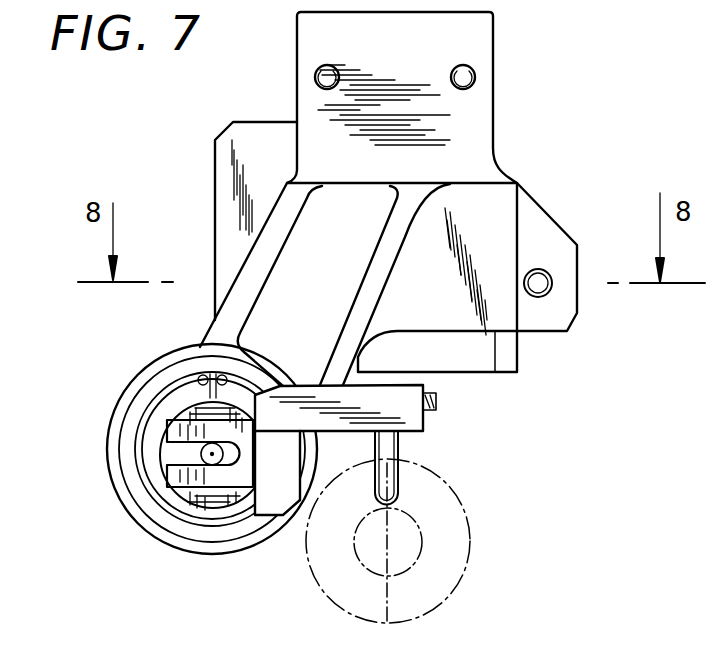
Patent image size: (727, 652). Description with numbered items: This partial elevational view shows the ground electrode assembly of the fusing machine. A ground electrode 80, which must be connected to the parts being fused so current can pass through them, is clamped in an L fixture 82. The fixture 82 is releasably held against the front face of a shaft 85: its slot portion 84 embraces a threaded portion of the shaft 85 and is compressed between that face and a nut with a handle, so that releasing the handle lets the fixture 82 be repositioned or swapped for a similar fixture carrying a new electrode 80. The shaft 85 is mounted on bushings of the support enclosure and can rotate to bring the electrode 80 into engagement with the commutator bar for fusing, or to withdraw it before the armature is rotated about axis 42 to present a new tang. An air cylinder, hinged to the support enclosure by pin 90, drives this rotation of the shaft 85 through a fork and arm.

The pin 90 is at (548, 290).
The shaft 85 is at (203, 508).
The slot portion 84 is at (178, 420).
The L fixture 82 is at (417, 425).
The ground electrode 80 is at (392, 488).
The axis 42 is at (387, 590).